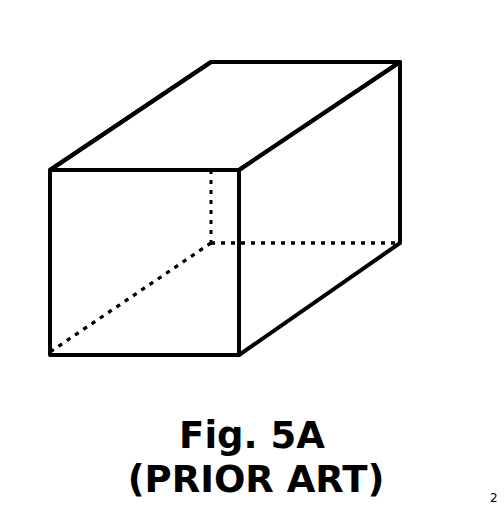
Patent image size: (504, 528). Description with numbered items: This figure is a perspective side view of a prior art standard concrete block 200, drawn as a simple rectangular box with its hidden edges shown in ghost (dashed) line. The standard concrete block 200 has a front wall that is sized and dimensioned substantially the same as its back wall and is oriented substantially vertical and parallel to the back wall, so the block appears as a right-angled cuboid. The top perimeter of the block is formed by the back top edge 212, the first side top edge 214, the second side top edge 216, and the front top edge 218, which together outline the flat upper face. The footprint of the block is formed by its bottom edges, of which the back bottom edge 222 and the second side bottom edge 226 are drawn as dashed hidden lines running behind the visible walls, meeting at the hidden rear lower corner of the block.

The standard concrete block 200 is at (401, 207).
The back top edge 212 is at (147, 102).
The first side top edge 214 is at (105, 168).
The second side top edge 216 is at (305, 62).
The front top edge 218 is at (318, 124).
The back bottom edge 222 is at (137, 300).
The second side bottom edge 226 is at (277, 250).